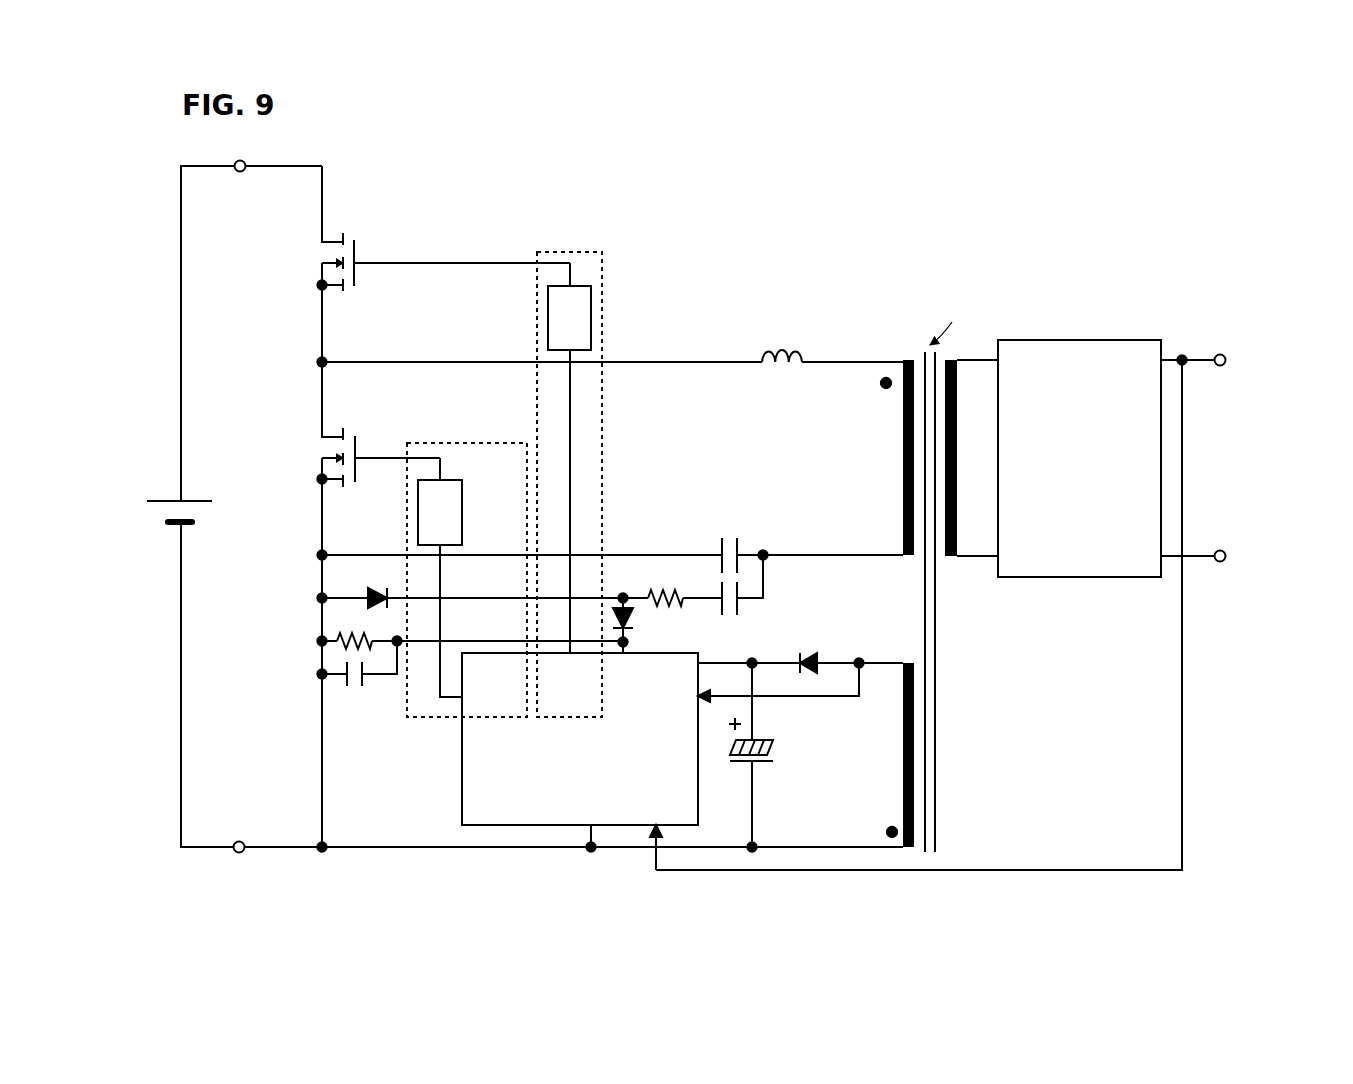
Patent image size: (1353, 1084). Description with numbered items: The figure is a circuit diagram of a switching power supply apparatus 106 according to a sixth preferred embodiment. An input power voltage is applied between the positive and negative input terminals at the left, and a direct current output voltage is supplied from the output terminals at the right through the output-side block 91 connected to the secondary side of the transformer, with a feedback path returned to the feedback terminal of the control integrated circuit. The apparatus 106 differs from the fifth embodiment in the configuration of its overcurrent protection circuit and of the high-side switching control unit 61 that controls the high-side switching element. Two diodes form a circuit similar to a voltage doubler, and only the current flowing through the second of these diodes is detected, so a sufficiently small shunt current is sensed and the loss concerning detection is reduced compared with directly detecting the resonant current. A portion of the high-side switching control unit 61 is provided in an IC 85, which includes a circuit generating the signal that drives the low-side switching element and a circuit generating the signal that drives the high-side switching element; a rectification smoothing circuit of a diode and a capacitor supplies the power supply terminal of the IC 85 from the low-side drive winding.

The switching power supply apparatus 106 is at (1240, 211).
The high-side switching control unit 61 is at (572, 252).
The IC 85 is at (462, 767).
The rectifying and smoothing circuit 91 is at (1060, 340).